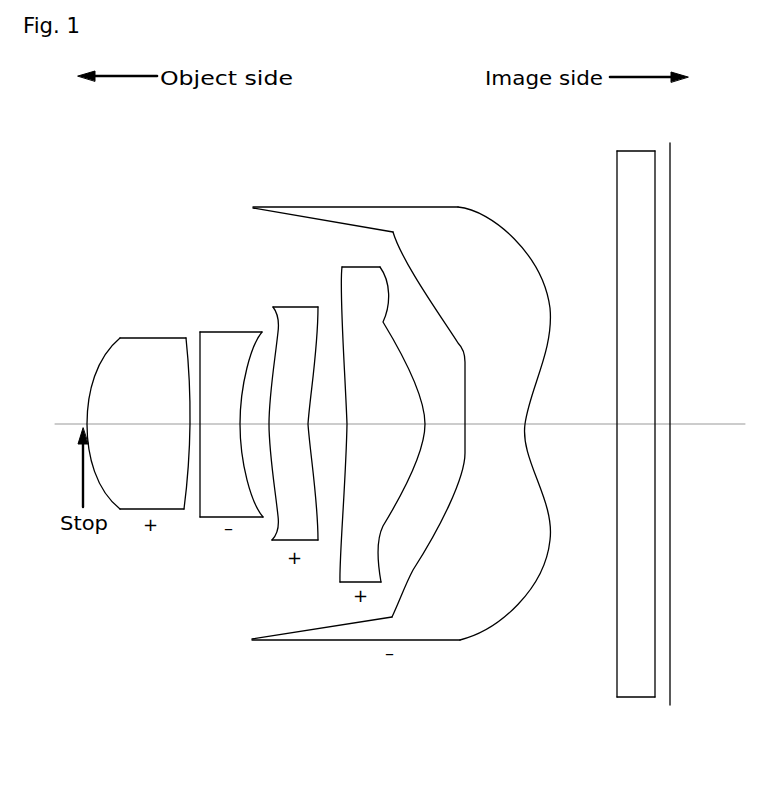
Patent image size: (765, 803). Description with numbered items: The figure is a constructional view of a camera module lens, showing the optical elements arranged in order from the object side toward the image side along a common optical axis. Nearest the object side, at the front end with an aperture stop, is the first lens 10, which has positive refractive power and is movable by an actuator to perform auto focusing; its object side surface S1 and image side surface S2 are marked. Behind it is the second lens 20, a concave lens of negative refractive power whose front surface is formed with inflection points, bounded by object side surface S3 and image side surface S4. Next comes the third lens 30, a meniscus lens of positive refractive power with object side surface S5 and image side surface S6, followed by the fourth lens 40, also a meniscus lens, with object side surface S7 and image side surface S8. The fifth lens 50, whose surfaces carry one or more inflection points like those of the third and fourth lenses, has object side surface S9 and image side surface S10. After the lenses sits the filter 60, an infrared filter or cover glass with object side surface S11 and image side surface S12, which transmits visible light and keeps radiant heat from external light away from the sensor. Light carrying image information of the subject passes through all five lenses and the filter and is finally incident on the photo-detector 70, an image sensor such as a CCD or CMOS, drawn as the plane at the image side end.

The first lens 10 is at (119, 432).
The second lens 20 is at (230, 419).
The third lens 30 is at (294, 421).
The fourth lens 40 is at (370, 435).
The fifth lens 50 is at (417, 457).
The filter 60 is at (619, 431).
The photo-detector 70 is at (672, 217).
The object side surface of the first lens S1 is at (102, 365).
The image side surface of the first lens S2 is at (187, 342).
The object side surface of the second lens S3 is at (200, 334).
The image side surface of the second lens S4 is at (263, 334).
The object side surface of the third lens S5 is at (275, 309).
The image side surface of the third lens S6 is at (318, 307).
The object side surface of the fourth lens S7 is at (341, 346).
The image side surface of the fourth lens S8 is at (388, 302).
The object side surface of the fifth lens S9 is at (458, 343).
The image side surface of the fifth lens S10 is at (550, 307).
The object side surface of the filter S11 is at (617, 192).
The image side surface of the filter S12 is at (655, 153).